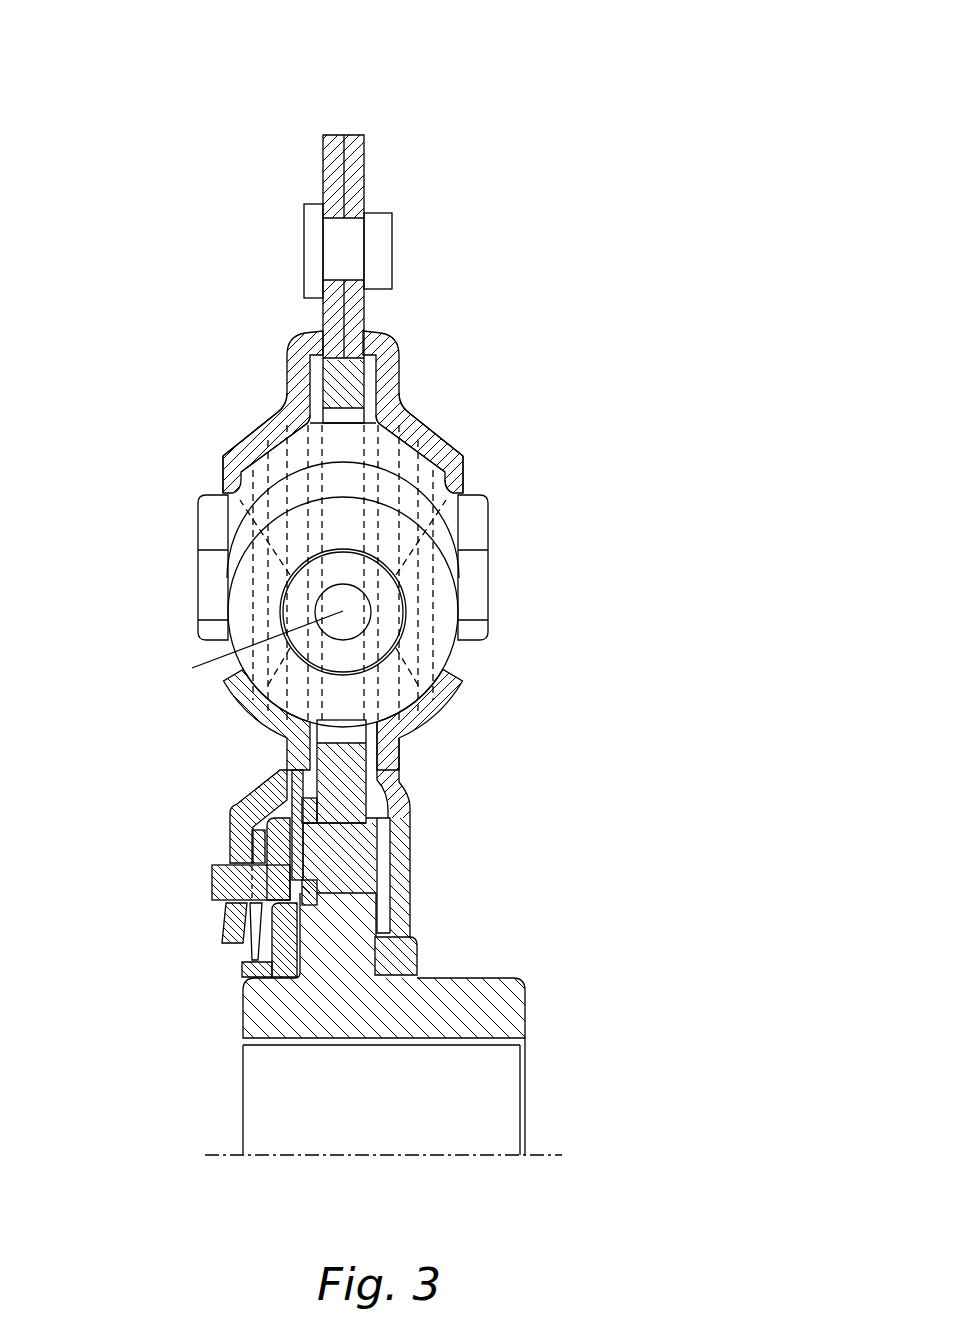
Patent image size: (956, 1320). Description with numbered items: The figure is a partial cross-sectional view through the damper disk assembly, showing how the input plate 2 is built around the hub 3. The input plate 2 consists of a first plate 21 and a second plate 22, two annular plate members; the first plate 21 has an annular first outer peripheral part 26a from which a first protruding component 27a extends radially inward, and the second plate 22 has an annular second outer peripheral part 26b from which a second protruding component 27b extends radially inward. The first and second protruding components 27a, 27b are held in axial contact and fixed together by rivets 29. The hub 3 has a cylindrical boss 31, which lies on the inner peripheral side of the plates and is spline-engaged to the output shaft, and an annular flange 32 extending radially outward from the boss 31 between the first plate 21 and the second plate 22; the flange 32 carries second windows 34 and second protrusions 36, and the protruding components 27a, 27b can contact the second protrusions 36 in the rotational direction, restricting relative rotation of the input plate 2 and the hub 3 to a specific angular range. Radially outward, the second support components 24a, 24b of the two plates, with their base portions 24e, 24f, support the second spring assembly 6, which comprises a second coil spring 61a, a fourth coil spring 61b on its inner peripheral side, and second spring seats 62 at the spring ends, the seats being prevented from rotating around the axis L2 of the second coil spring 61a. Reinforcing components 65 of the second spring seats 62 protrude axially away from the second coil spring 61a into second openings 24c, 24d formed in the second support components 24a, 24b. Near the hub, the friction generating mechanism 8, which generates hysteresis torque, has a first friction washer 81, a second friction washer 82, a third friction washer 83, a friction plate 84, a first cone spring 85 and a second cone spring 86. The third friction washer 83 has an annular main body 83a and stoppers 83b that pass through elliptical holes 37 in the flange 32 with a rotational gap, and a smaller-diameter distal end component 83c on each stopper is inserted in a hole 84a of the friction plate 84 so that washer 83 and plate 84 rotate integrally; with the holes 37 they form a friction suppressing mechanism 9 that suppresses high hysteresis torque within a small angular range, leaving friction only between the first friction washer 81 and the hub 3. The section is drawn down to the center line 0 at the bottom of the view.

The input plate 2 is at (383, 112).
The first outer peripheral part 26a is at (333, 158).
The second outer peripheral part 26b is at (365, 162).
The rivets 29 is at (355, 237).
The first protruding component 27a is at (306, 330).
The second protruding component 27b is at (357, 312).
The second protrusions 36 is at (338, 352).
The first plate 21 is at (280, 356).
The second plate 22 is at (408, 353).
The second support components 24a is at (258, 430).
The second support components 24b is at (446, 447).
The second openings 24c is at (230, 458).
The second openings 24d is at (468, 478).
The base portions 24e is at (291, 402).
The base portions 24f is at (400, 398).
The second windows 34 is at (412, 432).
The second spring assemblies 6 is at (497, 497).
The second spring seats 62 is at (188, 497).
The reinforcing components 65 is at (222, 570).
The second coil spring 61a is at (434, 591).
The fourth coil spring 61b is at (392, 630).
The axis of the second coil spring L2 is at (246, 649).
The friction generating mechanism 8 is at (424, 808).
The flange 32 is at (343, 783).
The third friction washer 83 is at (400, 845).
The main body 83a is at (385, 918).
The stoppers 83b is at (352, 888).
The distal end component 83c is at (282, 822).
The holes 37 is at (345, 900).
The friction suppressing mechanism 9 is at (292, 806).
The friction plate 84 is at (309, 808).
The hole 84a is at (250, 858).
The second friction washer 82 is at (273, 832).
The second cone spring 86 is at (256, 842).
The first cone spring 85 is at (240, 925).
The first friction washer 81 is at (255, 968).
The hub 3 is at (522, 970).
The boss 31 is at (497, 1026).
The center axis 0 is at (383, 1155).